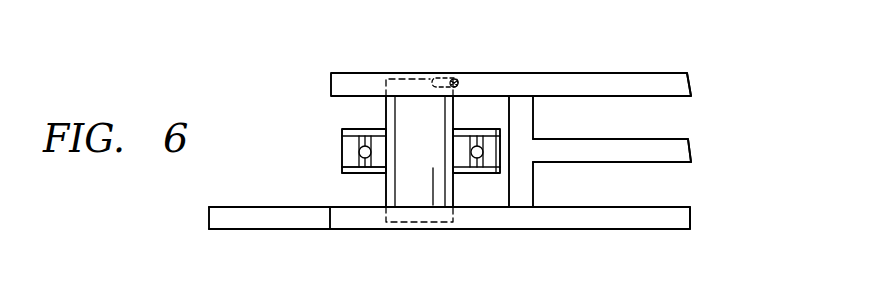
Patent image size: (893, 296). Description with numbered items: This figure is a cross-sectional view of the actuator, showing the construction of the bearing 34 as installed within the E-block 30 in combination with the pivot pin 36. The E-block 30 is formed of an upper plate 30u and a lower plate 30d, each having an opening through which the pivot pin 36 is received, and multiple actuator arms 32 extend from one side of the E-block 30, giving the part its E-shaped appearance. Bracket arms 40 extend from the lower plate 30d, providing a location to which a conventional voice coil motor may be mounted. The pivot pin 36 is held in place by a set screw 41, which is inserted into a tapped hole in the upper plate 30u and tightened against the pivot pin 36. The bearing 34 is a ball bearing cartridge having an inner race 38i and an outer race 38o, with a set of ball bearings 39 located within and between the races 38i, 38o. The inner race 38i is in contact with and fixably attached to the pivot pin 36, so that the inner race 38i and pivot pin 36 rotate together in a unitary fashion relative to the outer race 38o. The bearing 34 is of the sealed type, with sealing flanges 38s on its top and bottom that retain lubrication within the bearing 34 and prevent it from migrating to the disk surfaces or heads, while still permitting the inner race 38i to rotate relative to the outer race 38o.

The E-block 30 is at (567, 72).
The upper plate 30u is at (360, 72).
The lower plate 30d is at (438, 230).
The actuator arms 32 is at (692, 82).
The bearing 34 is at (276, 143).
The pivot pin 36 is at (436, 164).
The sealing flanges 38s is at (342, 238).
The outer race 38o is at (350, 164).
The inner race 38i is at (462, 140).
The ball bearings 39 is at (359, 151).
The bracket arms 40 is at (240, 207).
The set screw 41 is at (451, 80).